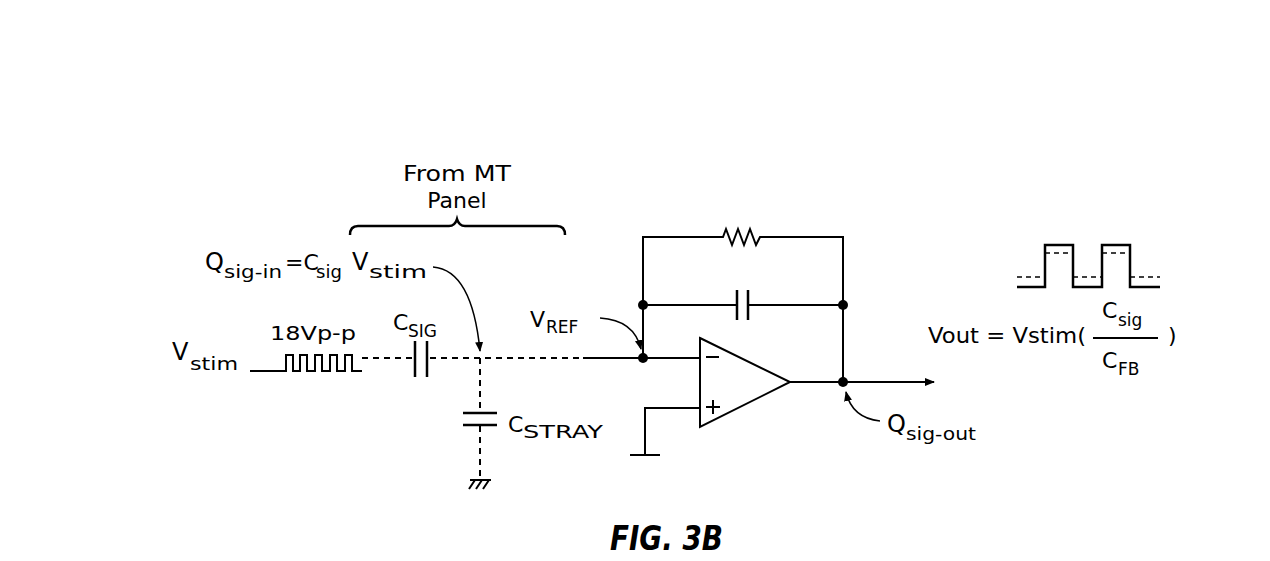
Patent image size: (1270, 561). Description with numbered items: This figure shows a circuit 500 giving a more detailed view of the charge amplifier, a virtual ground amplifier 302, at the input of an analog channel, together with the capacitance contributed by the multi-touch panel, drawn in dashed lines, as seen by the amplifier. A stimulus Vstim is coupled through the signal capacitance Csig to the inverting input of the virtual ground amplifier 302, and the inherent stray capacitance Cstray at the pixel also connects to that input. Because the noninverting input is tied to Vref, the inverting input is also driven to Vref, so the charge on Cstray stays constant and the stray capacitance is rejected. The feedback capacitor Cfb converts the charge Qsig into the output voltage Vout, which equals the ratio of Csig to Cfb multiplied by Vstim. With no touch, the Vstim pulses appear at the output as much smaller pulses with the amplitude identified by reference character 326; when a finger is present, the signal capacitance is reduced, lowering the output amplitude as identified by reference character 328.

The touch sensing circuit 500 is at (995, 68).
The virtual ground amplifier 302 is at (622, 208).
The no touch output amplitude 326 is at (1060, 243).
The touch output amplitude 328 is at (1118, 255).